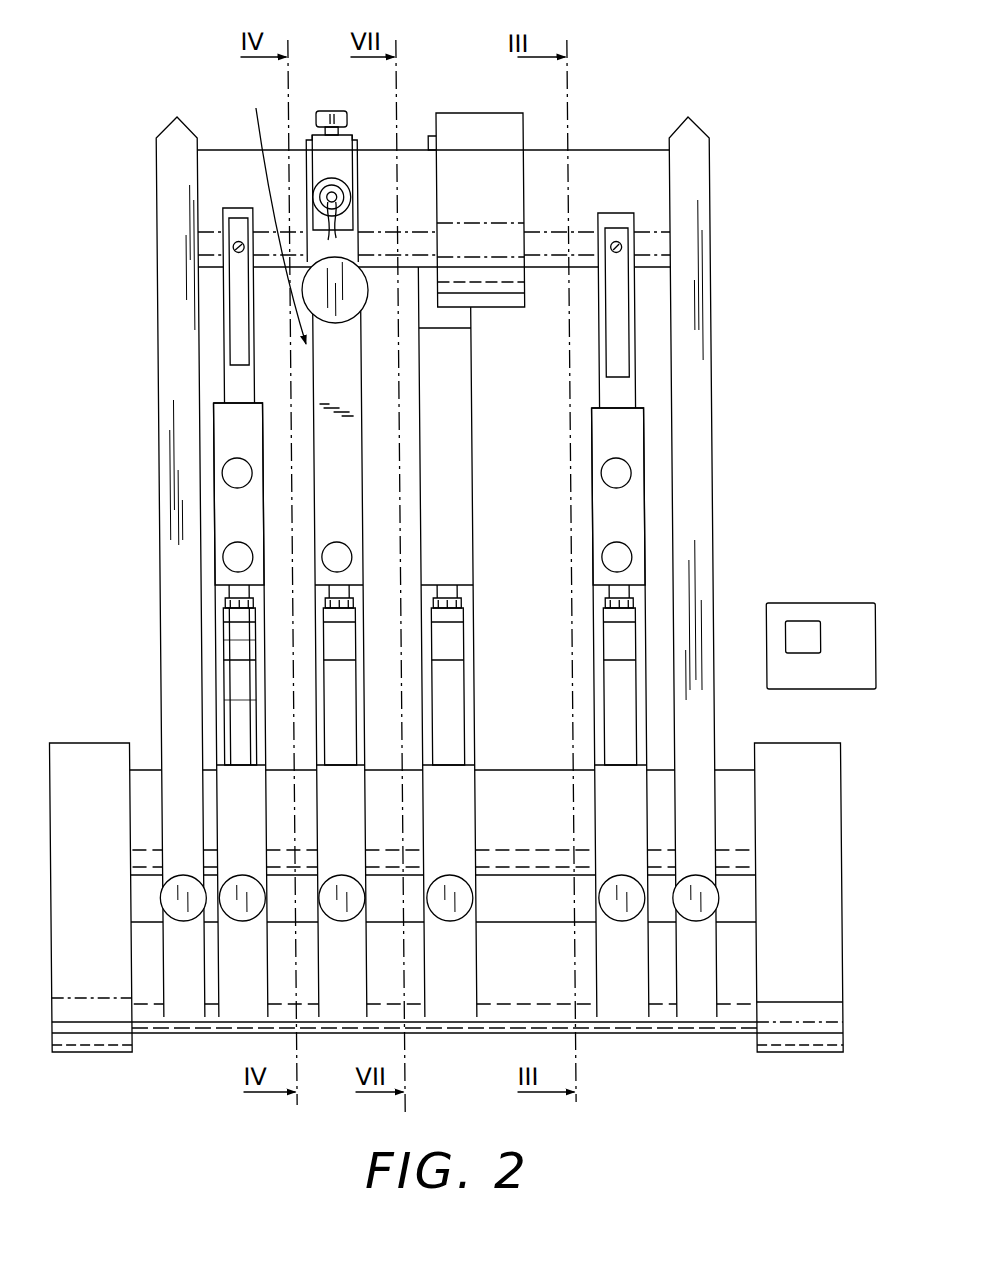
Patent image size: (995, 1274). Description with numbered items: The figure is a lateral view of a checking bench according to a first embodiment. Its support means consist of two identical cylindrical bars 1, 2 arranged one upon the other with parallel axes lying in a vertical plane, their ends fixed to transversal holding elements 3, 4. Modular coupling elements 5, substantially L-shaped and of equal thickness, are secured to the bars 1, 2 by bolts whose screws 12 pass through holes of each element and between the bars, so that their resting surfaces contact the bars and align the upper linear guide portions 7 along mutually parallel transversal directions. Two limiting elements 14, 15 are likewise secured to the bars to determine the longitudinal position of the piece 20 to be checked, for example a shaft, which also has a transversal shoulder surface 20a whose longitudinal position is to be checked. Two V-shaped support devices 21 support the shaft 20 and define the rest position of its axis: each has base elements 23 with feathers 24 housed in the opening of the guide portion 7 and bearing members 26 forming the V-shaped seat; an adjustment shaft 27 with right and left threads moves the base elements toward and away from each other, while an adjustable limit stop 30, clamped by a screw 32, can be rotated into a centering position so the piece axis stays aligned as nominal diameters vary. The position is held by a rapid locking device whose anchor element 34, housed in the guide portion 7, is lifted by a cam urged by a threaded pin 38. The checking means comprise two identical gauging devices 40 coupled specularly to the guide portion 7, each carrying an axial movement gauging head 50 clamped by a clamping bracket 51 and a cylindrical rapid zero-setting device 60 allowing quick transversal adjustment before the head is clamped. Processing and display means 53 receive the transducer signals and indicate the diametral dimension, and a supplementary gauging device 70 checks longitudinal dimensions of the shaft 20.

The cylindrical bar 1 is at (143, 778).
The cylindrical bar 2 is at (153, 1020).
The transversal holding element 3 is at (61, 750).
The transversal holding element 4 is at (802, 762).
The modular coupling element 5 is at (236, 677).
The linear guide portion 7 is at (230, 622).
The screw 12 is at (244, 906).
The limiting element 14 is at (172, 158).
The limiting element 15 is at (688, 162).
The piece to be checked 20 is at (616, 160).
The transversal shoulder surface 20a is at (437, 185).
The V-shaped support device 21 is at (204, 423).
The base element 23 is at (222, 503).
The feather 24 is at (232, 596).
The bearing member 26 is at (230, 386).
The adjustment shaft 27 is at (236, 483).
The adjustable reference limit stop 30 is at (236, 289).
The screw 32 is at (231, 246).
The anchor element 34 is at (236, 630).
The pin 38 is at (232, 554).
The gauging device 40 is at (265, 216).
The axial movement gauging head 50 is at (336, 186).
The clamping bracket 51 is at (326, 108).
The processing and display means 53 is at (830, 605).
The rapid zero-setting device 60 is at (355, 282).
The supplementary gauging device 70 is at (482, 366).